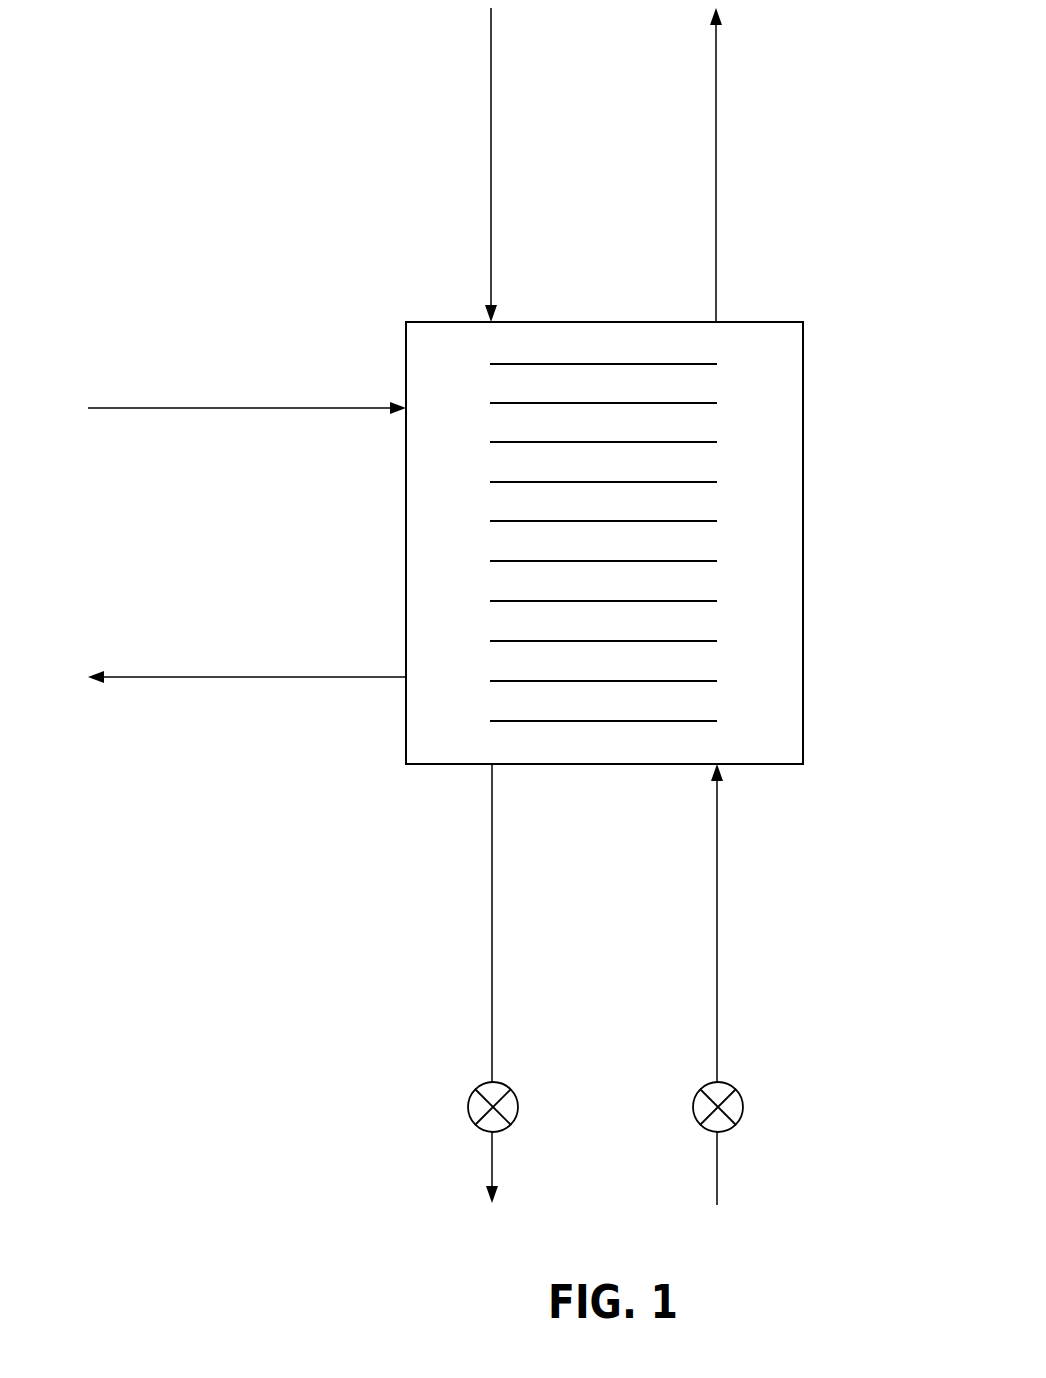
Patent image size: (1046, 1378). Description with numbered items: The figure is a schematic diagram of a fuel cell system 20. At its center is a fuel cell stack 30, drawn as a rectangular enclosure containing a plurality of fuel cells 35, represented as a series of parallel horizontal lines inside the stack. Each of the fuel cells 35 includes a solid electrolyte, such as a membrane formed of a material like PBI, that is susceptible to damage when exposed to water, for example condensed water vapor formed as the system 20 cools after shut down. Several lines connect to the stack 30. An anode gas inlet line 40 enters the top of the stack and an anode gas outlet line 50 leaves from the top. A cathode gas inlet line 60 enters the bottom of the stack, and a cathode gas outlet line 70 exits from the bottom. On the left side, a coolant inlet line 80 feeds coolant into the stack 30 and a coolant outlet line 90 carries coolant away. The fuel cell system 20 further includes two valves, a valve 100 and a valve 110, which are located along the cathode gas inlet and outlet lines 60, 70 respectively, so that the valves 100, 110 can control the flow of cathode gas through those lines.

The fuel cell system 20 is at (912, 160).
The fuel cell stack 30 is at (803, 541).
The fuel cells 35 is at (677, 363).
The anode gas inlet line 40 is at (491, 155).
The anode gas outlet line 50 is at (716, 163).
The cathode gas inlet line 60 is at (716, 920).
The cathode gas outlet line 70 is at (492, 912).
The coolant inlet line 80 is at (248, 406).
The coolant outlet line 90 is at (249, 675).
The valve 100 is at (468, 1108).
The valve 110 is at (693, 1108).